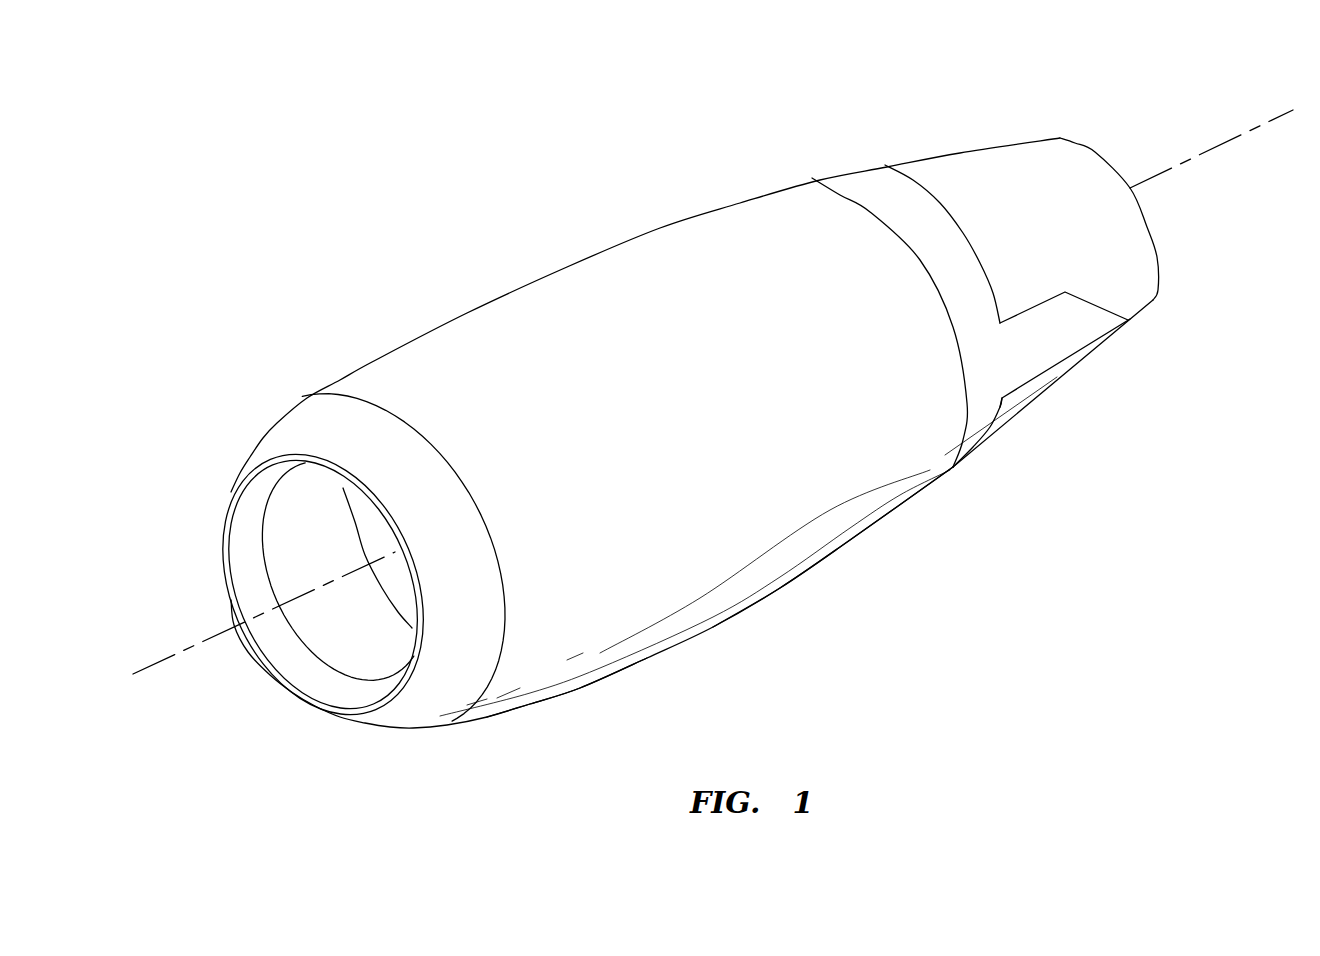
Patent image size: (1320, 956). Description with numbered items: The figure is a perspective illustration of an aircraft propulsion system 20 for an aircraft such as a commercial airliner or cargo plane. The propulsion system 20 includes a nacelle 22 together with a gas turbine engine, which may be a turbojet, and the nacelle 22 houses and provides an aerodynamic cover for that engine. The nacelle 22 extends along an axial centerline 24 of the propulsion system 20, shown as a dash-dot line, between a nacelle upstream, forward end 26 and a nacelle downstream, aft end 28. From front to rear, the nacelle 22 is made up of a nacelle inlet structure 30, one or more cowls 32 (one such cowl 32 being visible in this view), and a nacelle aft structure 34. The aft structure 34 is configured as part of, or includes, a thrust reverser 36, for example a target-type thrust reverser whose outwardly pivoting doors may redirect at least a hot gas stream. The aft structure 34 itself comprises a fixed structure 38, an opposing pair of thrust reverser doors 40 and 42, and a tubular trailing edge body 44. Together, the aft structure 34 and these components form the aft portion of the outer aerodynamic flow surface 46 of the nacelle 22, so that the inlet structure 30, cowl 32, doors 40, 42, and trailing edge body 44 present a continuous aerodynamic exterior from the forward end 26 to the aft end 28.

The aircraft propulsion system 20 is at (295, 235).
The nacelle 22 is at (645, 476).
The axial centerline 24 is at (133, 674).
The nacelle upstream, forward end 26 is at (225, 520).
The nacelle downstream, aft end 28 is at (1093, 315).
The nacelle inlet structure 30 is at (533, 722).
The cowl 32 is at (815, 595).
The nacelle aft structure 34 is at (1007, 447).
The thrust reverser 36 is at (920, 145).
The fixed structure 38 is at (1043, 350).
The thrust reverser door 40 is at (992, 142).
The thrust reverser door 42 is at (1040, 402).
The trailing edge body 44 is at (1145, 238).
The outer aerodynamic flow surface 46 is at (630, 273).